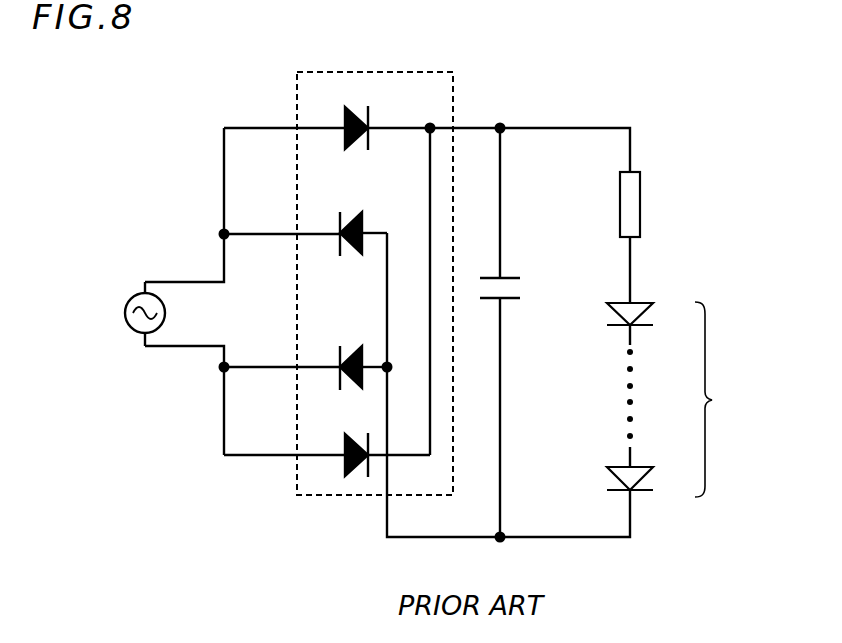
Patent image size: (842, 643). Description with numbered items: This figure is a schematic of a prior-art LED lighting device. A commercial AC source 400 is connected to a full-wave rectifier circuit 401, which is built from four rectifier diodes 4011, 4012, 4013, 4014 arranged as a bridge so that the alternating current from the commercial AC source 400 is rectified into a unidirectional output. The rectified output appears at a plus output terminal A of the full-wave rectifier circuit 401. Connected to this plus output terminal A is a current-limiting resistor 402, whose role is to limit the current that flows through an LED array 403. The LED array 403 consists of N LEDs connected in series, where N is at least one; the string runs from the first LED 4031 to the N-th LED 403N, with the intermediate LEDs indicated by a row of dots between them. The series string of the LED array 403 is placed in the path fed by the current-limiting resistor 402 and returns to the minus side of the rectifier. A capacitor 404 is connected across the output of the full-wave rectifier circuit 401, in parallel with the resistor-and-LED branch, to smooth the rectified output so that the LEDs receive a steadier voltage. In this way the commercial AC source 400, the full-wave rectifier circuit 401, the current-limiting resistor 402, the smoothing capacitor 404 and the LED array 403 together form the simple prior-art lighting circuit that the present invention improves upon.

The commercial AC source 400 is at (168, 357).
The full-wave rectifier circuit 401 is at (296, 494).
The rectifier diode 4011 is at (345, 122).
The rectifier diode 4012 is at (365, 218).
The rectifier diode 4013 is at (355, 350).
The rectifier diode 4014 is at (348, 447).
The current-limiting resistor 402 is at (641, 196).
The LED array 403 is at (728, 399).
The LED 403N is at (655, 290).
The LED 4031 is at (660, 455).
The capacitor 404 is at (507, 275).
The plus output terminal A is at (432, 121).